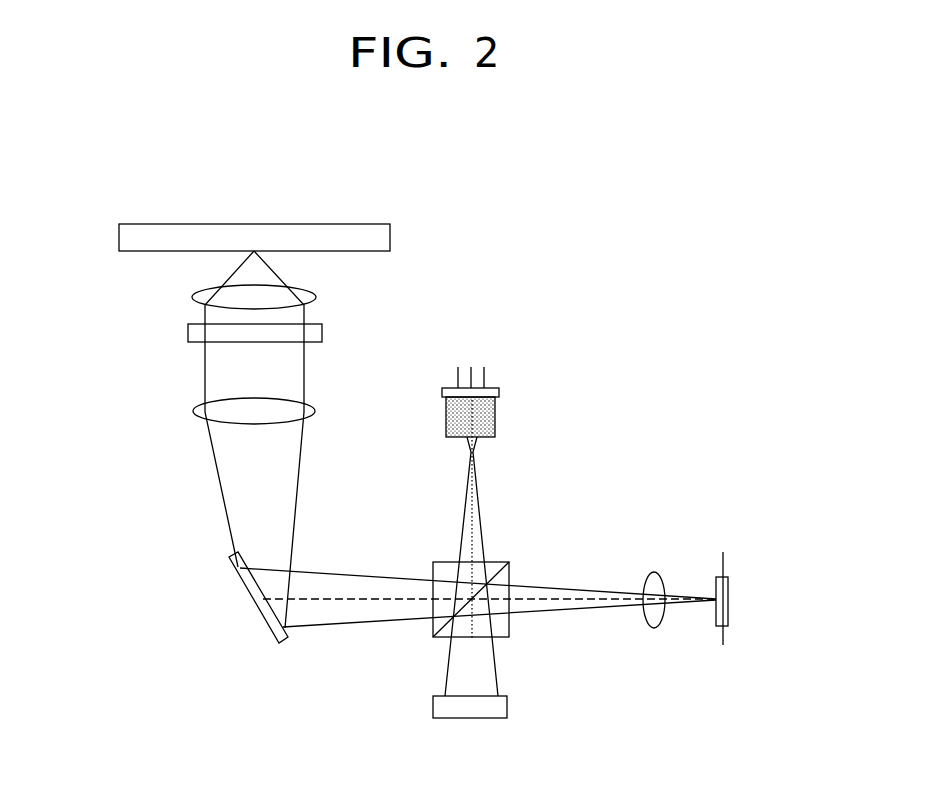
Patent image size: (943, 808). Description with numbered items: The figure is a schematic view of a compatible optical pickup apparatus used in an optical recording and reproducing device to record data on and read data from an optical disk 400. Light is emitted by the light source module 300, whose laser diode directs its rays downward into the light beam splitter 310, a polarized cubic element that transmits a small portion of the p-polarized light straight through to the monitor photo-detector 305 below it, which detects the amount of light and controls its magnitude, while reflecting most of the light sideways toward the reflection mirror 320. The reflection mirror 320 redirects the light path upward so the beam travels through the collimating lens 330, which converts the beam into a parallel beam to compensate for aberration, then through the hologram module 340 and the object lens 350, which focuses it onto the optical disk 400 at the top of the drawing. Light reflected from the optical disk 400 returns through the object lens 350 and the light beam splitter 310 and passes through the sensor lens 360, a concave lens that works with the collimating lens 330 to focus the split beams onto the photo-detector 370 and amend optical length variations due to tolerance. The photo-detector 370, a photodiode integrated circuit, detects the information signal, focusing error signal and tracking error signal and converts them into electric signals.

The optical disk 400 is at (390, 229).
The object lens 350 is at (315, 296).
The hologram module 340 is at (322, 333).
The collimating lens 330 is at (315, 411).
The reflection mirror 320 is at (229, 557).
The light source module 300 is at (499, 401).
The light beam splitter 310 is at (509, 562).
The sensor lens 360 is at (655, 572).
The photo-detector 370 is at (728, 598).
The monitor photo-detector 305 is at (433, 717).